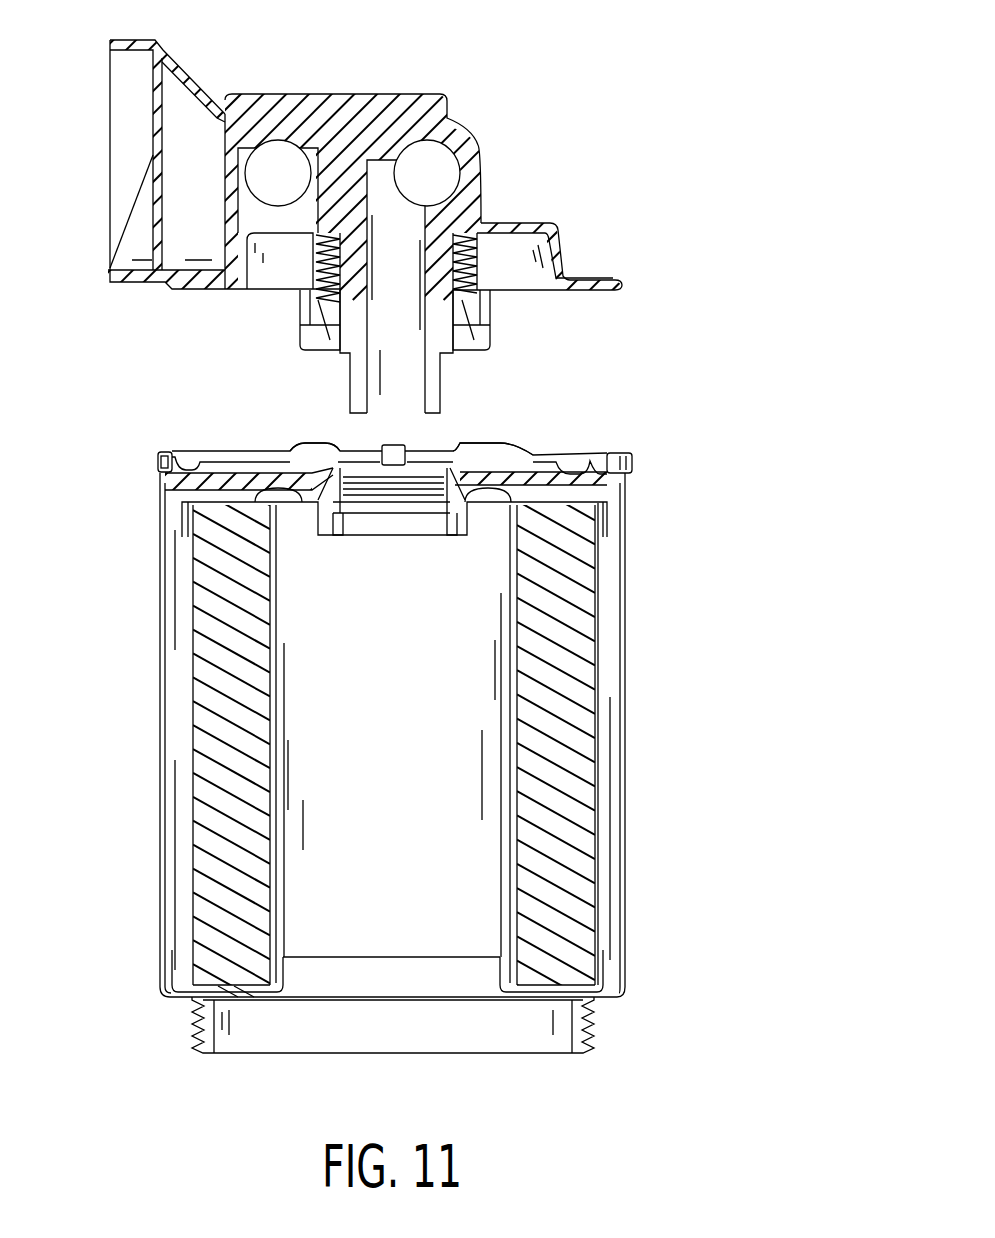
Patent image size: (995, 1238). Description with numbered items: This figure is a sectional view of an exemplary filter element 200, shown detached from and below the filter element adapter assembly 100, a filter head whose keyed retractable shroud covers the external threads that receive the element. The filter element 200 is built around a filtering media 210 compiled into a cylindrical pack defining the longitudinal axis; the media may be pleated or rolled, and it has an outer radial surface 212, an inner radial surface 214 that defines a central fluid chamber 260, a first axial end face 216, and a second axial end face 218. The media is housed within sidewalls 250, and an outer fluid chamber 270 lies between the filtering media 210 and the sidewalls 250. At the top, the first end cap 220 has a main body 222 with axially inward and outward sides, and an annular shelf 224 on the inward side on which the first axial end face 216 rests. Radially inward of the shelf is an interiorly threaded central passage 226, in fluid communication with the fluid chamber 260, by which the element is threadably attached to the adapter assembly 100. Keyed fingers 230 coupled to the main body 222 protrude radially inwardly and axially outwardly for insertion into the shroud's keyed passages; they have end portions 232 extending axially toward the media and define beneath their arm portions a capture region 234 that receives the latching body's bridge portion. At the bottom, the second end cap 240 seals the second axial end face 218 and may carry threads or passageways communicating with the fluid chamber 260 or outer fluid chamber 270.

The filter element adapter assembly 100 is at (684, 156).
The filter element 200 is at (679, 1000).
The filtering media 210 is at (595, 822).
The outer radial surface 212 is at (595, 660).
The inner radial surface 214 is at (515, 655).
The first axial end face 216 is at (292, 500).
The second axial end face 218 is at (247, 993).
The first end cap 220 is at (630, 423).
The main body 222 is at (540, 484).
The annular shelf 224 is at (563, 533).
The interiorly threaded central passage 226 is at (434, 476).
The keyed fingers 230 is at (497, 447).
The end portions 232 is at (332, 446).
The capture region 234 is at (318, 447).
The second end cap 240 is at (582, 1052).
The sidewalls 250 is at (623, 712).
The fluid chamber 260 is at (420, 908).
The outer fluid chamber 270 is at (182, 760).